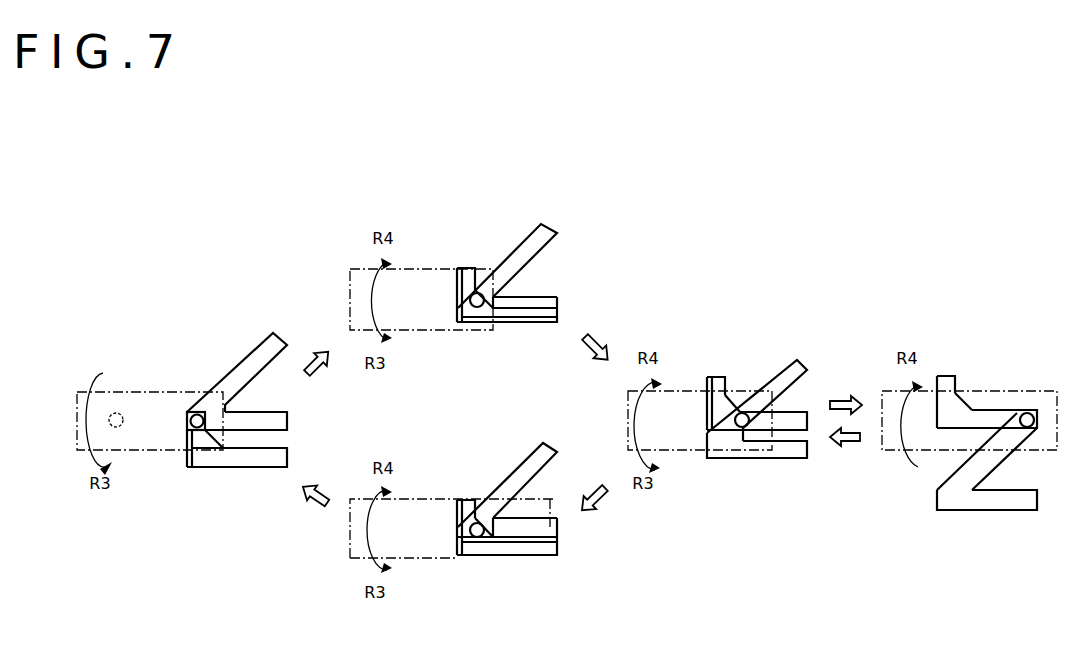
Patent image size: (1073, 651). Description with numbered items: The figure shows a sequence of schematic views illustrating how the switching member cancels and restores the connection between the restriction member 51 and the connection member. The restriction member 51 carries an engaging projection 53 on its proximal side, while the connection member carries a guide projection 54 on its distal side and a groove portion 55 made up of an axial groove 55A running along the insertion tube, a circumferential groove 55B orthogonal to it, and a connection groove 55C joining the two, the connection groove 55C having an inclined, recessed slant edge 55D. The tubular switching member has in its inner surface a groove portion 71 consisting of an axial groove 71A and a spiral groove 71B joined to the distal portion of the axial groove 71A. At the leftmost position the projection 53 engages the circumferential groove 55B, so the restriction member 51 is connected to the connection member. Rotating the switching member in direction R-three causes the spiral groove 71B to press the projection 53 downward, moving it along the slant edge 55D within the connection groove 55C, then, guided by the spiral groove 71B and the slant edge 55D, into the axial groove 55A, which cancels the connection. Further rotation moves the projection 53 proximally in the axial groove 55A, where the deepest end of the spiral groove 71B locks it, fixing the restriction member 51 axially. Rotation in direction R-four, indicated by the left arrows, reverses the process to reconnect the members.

The restriction member 51 is at (159, 391).
The projection 53 is at (190, 421).
The projection 54 is at (120, 412).
The groove portion 55 is at (600, 455).
The axial groove 55A is at (619, 453).
The circumferential groove 55B is at (198, 433).
The connection groove 55C is at (196, 461).
The slant edge 55D is at (218, 446).
The groove portion 71 is at (622, 372).
The axial groove 71A is at (274, 418).
The spiral groove 71B is at (246, 367).